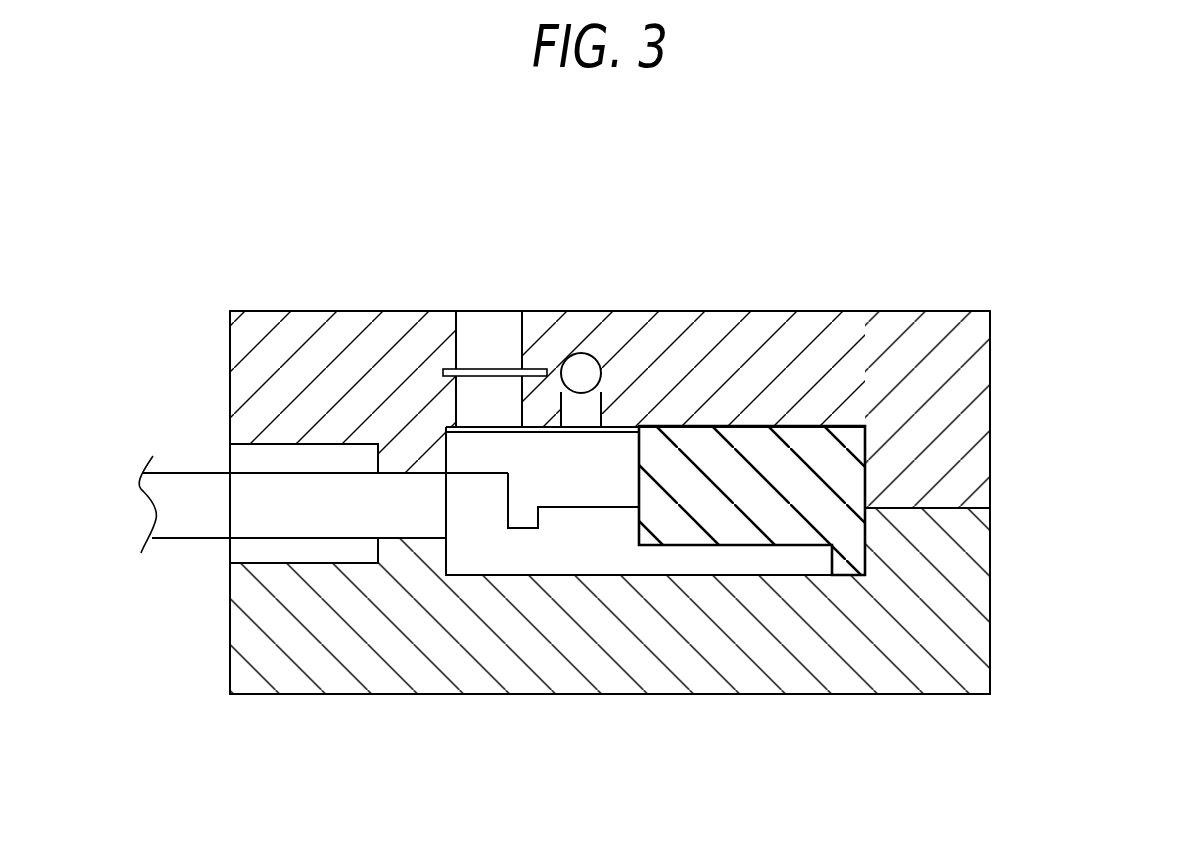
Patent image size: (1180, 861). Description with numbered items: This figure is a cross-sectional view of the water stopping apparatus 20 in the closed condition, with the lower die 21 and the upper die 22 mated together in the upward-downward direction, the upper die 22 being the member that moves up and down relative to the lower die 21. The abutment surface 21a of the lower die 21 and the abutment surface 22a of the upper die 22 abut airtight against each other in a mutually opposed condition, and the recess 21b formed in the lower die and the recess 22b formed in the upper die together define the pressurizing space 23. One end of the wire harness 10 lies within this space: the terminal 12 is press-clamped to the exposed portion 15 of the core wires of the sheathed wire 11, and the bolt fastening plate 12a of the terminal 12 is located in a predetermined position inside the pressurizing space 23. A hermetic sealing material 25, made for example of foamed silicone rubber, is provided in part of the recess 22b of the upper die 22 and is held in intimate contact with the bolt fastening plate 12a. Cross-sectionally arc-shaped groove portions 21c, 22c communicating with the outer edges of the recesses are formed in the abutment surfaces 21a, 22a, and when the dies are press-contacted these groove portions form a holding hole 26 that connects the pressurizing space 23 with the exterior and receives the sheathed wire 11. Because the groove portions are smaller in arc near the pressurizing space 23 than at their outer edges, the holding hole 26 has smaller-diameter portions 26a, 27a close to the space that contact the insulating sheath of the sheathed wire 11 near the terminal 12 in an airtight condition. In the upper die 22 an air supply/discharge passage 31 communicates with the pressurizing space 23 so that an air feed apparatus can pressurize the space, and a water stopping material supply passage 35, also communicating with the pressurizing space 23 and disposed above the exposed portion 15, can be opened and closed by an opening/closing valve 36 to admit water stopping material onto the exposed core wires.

The wire harness 10 is at (198, 548).
The sheathed wire 11 is at (194, 472).
The terminal 12 is at (508, 560).
The bolt fastening plate 12a is at (697, 567).
The exposed portion 15 is at (619, 461).
The water stopping apparatus 20 is at (1031, 250).
The lower die 21 is at (978, 708).
The abutment surface 21a is at (892, 508).
The recess 21b is at (842, 560).
The groove portion 21c is at (230, 585).
The upper die 22 is at (939, 311).
The abutment surface 22a is at (947, 508).
The recess 22b is at (807, 493).
The groove portion 22c is at (245, 457).
The pressurizing space 23 is at (583, 453).
The hermetic sealing material 25 is at (870, 473).
The holding hole 26 is at (317, 455).
The smaller-diameter portion 26a is at (420, 538).
The smaller-diameter portion 27a is at (409, 505).
The air supply/discharge passage 31 is at (568, 366).
The water stopping material supply passage 35 is at (492, 332).
The opening/closing valve 36 is at (477, 370).